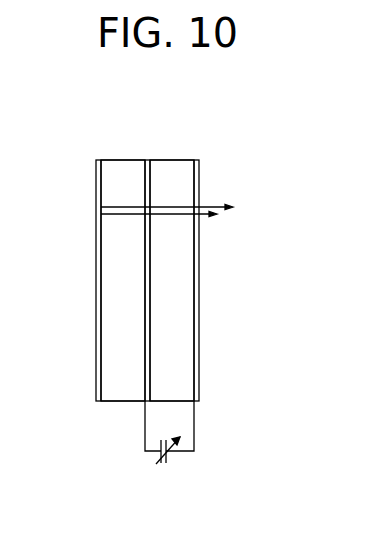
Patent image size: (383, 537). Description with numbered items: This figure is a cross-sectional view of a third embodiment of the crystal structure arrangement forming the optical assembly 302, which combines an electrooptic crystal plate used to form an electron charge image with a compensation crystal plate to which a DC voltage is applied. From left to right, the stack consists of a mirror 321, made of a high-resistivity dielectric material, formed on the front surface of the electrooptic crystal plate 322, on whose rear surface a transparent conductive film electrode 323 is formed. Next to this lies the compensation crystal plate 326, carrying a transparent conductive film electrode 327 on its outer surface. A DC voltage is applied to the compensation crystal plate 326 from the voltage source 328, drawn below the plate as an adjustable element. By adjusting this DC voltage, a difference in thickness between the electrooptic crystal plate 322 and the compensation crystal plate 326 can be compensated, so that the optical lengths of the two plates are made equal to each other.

The optical assembly 302 is at (96, 258).
The mirror 321 is at (96, 172).
The electrooptic crystal plate 322 is at (123, 160).
The transparent conductive film electrode 323 is at (147, 160).
The compensation crystal plate 326 is at (181, 160).
The transparent conductive film electrode 327 is at (199, 161).
The voltage source 328 is at (168, 458).